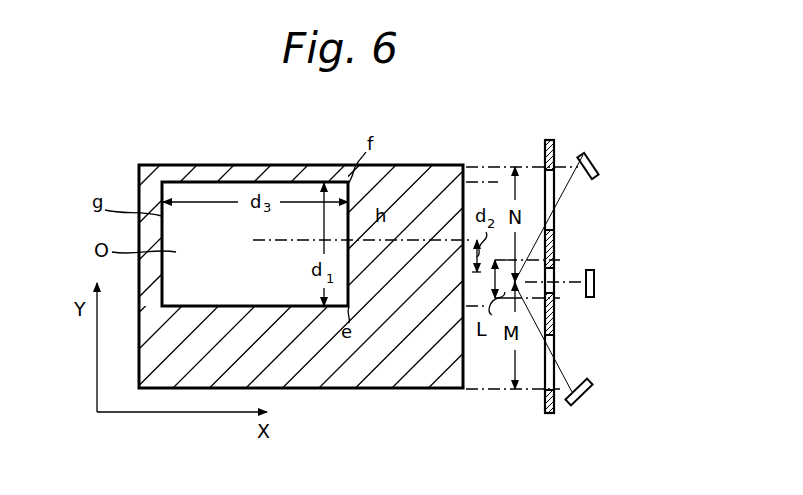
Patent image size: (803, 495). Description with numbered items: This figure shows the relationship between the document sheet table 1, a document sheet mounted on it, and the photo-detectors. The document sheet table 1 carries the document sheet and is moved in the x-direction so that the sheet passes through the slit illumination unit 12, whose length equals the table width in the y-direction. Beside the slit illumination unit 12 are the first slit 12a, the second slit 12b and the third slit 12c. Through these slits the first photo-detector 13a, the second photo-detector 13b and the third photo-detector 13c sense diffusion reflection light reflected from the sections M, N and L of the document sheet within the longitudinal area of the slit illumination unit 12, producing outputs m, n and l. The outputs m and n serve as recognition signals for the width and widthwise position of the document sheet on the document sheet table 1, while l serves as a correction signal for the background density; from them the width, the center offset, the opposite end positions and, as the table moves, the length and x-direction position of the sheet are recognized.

The document sheet table 1 is at (355, 390).
The slit illumination unit 12 is at (549, 140).
The first slit 12a is at (556, 356).
The second slit 12b is at (553, 186).
The third slit 12c is at (554, 264).
The first photo-detector 13a is at (588, 385).
The second photo-detector 13b is at (594, 158).
The third photo-detector 13c is at (592, 297).